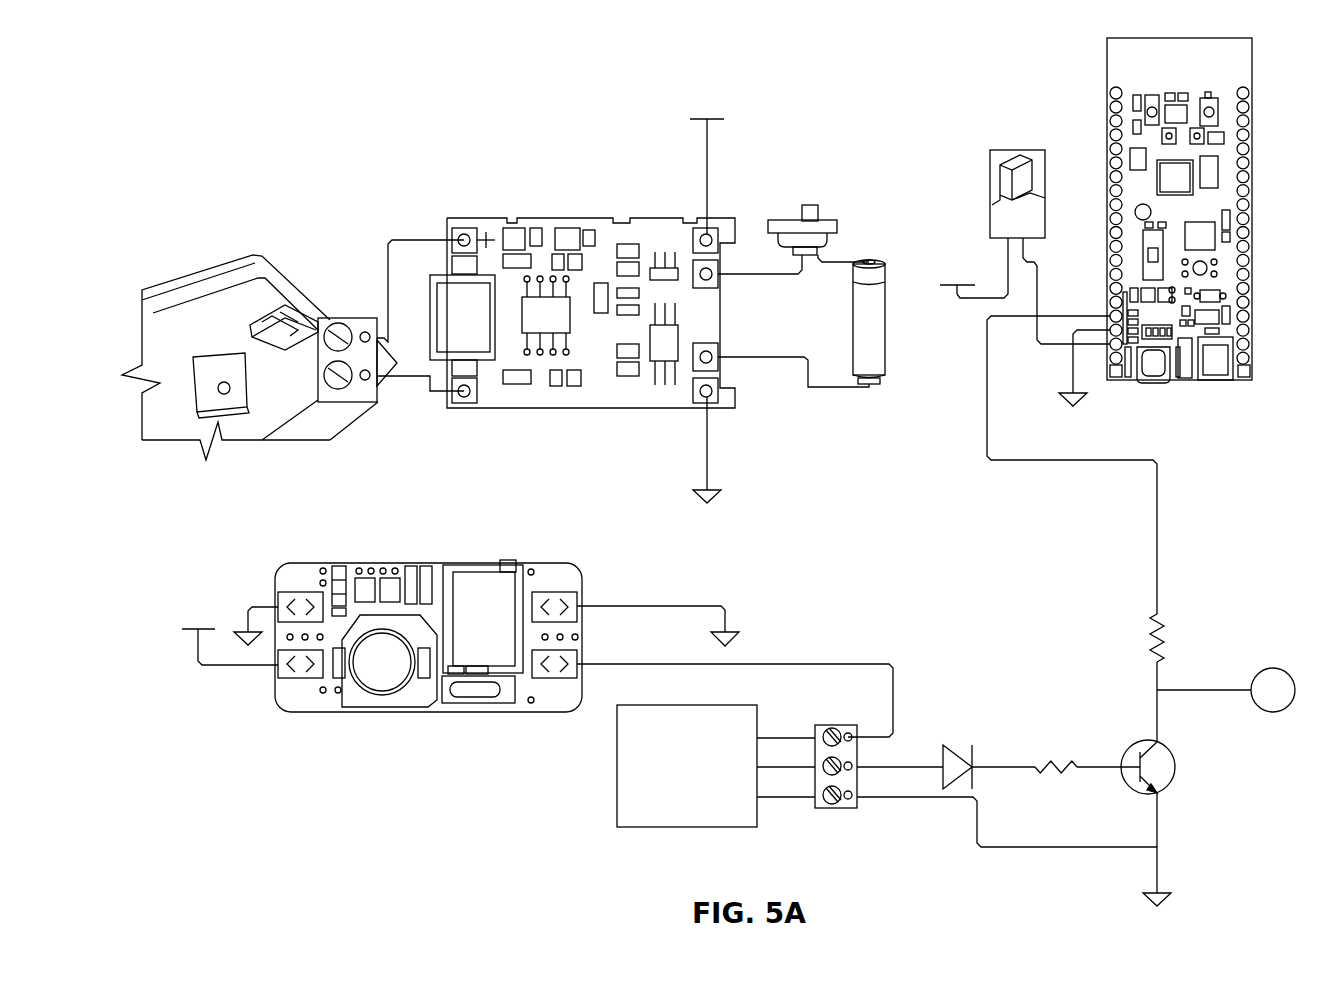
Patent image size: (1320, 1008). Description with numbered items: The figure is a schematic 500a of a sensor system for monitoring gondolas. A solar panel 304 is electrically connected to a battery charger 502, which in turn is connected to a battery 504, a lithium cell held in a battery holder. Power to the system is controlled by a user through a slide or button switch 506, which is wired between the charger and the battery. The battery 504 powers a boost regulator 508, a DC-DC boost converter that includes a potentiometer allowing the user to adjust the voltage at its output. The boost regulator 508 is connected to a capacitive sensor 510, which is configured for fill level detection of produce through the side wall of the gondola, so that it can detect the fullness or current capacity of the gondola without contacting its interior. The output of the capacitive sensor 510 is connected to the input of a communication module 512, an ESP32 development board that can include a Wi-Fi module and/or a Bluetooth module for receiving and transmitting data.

The schematic 500a is at (324, 152).
The solar panel 304 is at (156, 516).
The battery charger 502 is at (571, 471).
The battery 504 is at (849, 448).
The slide or button switch 506 is at (869, 190).
The boost regulator 508 is at (409, 774).
The capacitive sensor 510 is at (668, 819).
The communication module 512 is at (1161, 27).